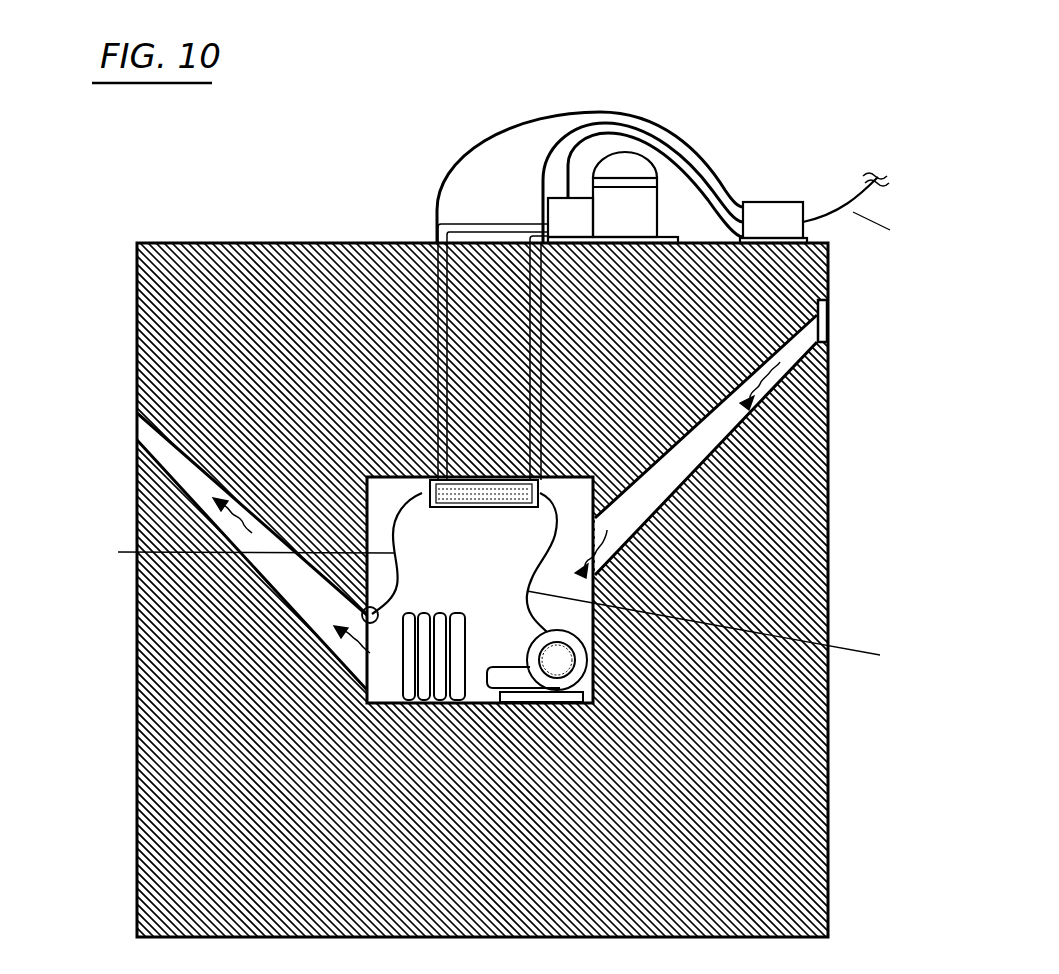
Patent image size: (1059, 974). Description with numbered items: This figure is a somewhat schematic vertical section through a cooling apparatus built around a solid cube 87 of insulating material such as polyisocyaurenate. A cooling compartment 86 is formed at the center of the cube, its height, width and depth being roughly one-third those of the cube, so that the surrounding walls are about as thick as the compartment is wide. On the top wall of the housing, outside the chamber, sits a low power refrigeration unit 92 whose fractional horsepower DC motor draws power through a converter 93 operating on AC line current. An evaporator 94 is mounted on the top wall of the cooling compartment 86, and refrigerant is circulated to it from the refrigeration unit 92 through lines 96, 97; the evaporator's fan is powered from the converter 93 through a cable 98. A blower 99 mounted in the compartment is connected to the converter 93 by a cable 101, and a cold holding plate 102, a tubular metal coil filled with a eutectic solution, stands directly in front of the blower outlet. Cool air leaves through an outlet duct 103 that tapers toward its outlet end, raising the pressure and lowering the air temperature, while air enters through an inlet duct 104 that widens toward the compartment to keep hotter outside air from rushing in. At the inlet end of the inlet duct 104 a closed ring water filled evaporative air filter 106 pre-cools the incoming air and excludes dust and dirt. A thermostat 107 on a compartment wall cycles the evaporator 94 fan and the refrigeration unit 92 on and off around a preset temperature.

The cooling compartment 86 is at (480, 563).
The solid cube 87 is at (250, 318).
The refrigeration unit 92 is at (623, 210).
The converter 93 is at (778, 217).
The evaporator 94 is at (545, 500).
The line 96 is at (535, 237).
The line 97 is at (447, 223).
The cable 98 is at (533, 117).
The blower 99 is at (560, 660).
The cable 101 is at (565, 175).
The cold holding plate 102 is at (432, 660).
The outlet duct 103 is at (307, 593).
The inlet duct 104 is at (685, 458).
The evaporative air filter 106 is at (825, 318).
The thermostat 107 is at (360, 617).